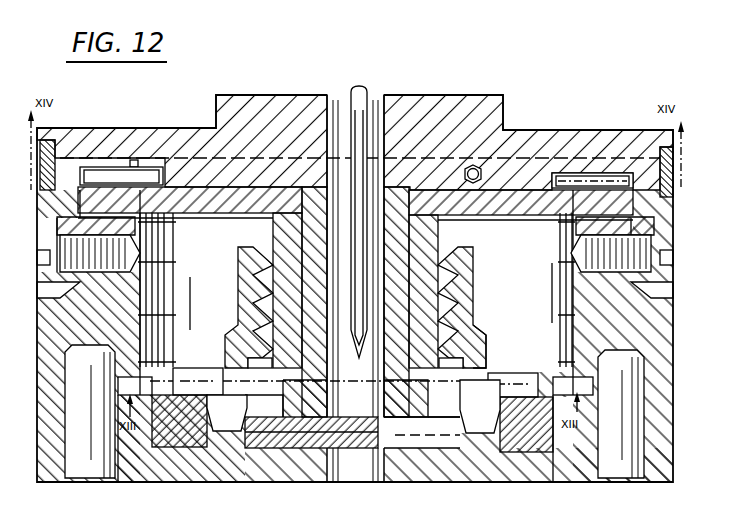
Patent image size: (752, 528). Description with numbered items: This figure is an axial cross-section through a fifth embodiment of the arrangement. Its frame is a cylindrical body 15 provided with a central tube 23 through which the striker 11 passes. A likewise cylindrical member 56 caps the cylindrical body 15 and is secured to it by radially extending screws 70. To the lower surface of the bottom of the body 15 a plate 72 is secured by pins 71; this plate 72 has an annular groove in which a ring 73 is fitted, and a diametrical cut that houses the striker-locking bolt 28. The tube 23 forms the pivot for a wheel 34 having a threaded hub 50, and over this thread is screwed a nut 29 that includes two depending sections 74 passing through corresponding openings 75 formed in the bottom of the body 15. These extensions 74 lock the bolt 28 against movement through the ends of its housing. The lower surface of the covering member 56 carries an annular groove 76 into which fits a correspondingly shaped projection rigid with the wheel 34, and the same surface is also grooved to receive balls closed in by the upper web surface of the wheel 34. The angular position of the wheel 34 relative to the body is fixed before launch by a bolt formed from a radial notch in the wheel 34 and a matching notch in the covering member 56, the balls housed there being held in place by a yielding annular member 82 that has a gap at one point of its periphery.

The cylindrical body 15 is at (36, 348).
The cylindrical member 56 is at (271, 104).
The striker 11 is at (372, 102).
The yielding annular member 82 is at (58, 137).
The annular groove 76 is at (583, 172).
The radially extending screws 70 is at (166, 229).
The wheel 34 is at (231, 203).
The central tube 23 is at (455, 238).
The threaded hub 50 is at (478, 279).
The nut 29 is at (488, 345).
The openings 75 is at (194, 372).
The pins 71 is at (85, 458).
The ring 73 is at (180, 437).
The depending sections 74 is at (227, 422).
The striker-locking bolt 28 is at (288, 440).
The plate 72 is at (441, 472).